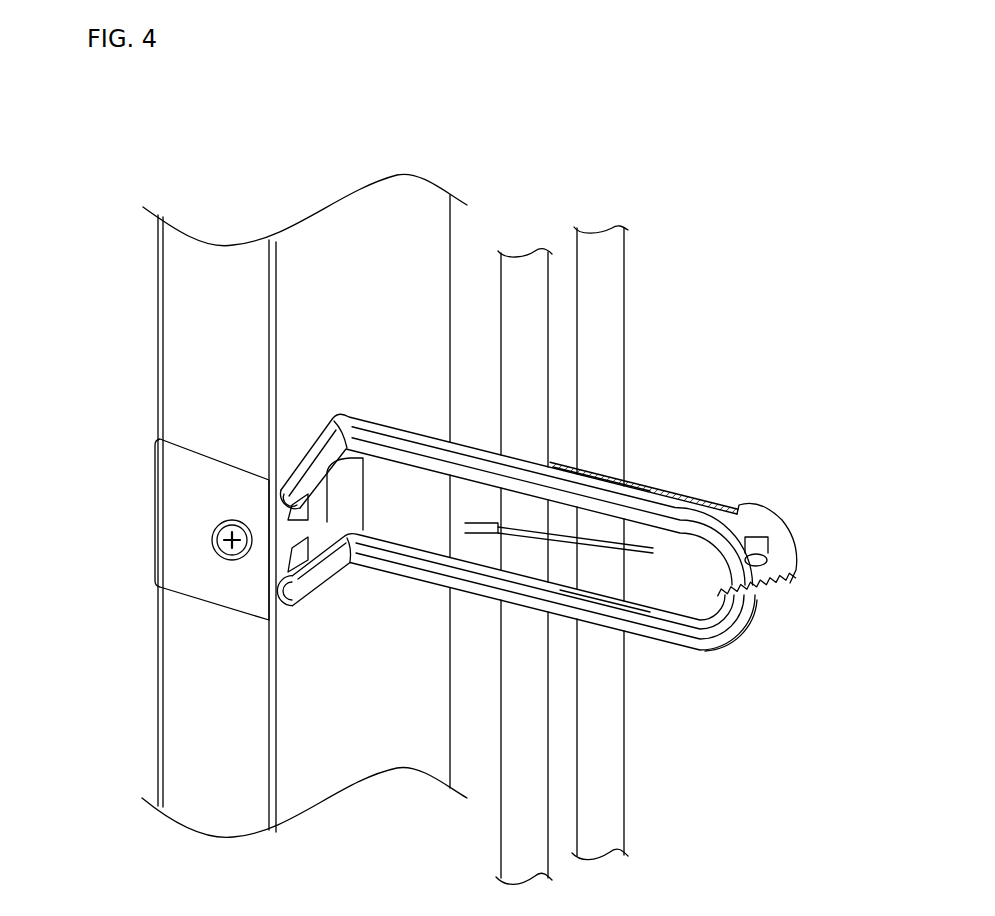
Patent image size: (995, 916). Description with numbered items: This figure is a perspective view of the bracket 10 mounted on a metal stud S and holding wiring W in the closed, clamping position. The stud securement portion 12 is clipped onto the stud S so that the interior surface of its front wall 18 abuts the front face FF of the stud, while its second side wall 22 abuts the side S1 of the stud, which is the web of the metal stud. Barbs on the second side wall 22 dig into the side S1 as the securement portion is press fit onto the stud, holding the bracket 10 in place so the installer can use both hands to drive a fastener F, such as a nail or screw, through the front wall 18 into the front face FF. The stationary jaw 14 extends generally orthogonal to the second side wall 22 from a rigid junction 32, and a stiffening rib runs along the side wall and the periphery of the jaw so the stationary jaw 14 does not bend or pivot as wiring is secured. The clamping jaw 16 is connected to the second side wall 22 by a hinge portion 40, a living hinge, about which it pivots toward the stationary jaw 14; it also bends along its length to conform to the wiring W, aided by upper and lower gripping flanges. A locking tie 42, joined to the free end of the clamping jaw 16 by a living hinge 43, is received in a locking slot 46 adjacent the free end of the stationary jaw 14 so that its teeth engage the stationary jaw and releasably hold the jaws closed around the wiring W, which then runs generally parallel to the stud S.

The bracket 10 is at (556, 515).
The stud securement portion 12 is at (170, 529).
The stationary jaw 14 is at (514, 524).
The clamping jaw 16 is at (777, 530).
The front wall 18 is at (183, 518).
The second side wall 22 is at (521, 616).
The junction 32 is at (349, 425).
The hinge portion 40 is at (350, 500).
The locking tie 42 is at (717, 613).
The living hinge 43 is at (758, 548).
The locking slot 46 is at (752, 600).
The fastener F is at (218, 553).
The front face FF is at (203, 332).
The stud S is at (304, 479).
The side of the stud S1 is at (364, 295).
The wiring W is at (604, 276).